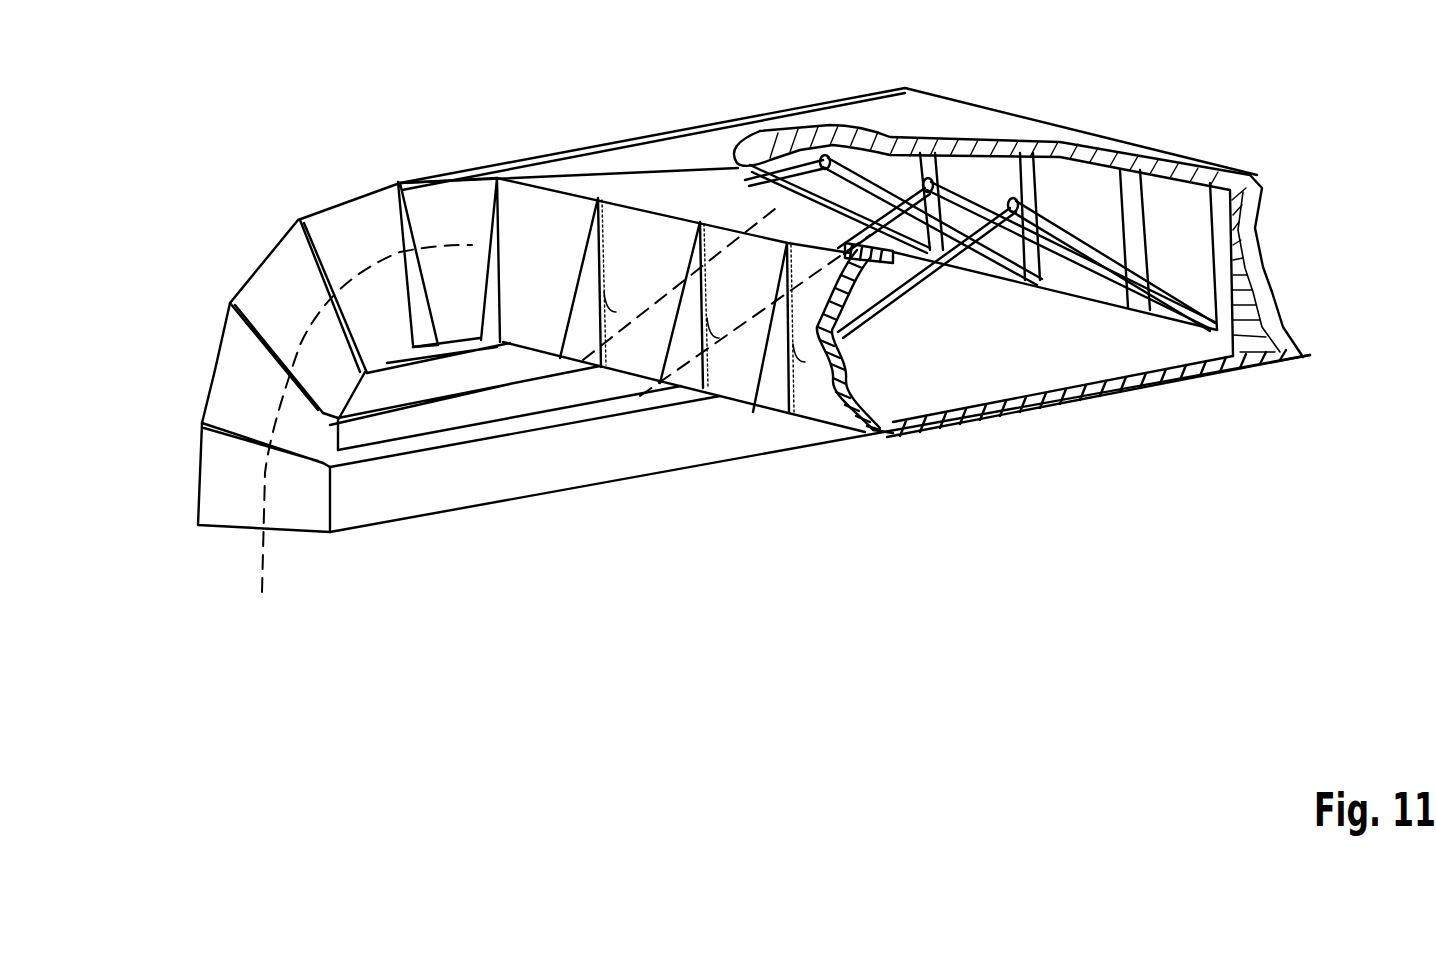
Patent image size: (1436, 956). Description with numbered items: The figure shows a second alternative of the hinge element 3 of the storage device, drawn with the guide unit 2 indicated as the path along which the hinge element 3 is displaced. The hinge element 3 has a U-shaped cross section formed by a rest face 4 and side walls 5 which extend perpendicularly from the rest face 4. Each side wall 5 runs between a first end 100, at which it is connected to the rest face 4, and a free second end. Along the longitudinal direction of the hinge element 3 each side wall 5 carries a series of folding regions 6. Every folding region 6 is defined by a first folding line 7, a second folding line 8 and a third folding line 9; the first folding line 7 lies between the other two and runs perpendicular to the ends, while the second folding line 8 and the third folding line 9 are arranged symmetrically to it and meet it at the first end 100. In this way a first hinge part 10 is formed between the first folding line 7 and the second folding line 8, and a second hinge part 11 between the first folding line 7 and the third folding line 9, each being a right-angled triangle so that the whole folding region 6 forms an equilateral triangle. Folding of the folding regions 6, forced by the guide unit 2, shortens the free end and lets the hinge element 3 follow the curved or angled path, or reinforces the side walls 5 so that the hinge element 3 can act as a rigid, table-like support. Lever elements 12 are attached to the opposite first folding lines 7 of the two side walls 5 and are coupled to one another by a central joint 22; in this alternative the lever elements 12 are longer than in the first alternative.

The guide unit 2 is at (256, 578).
The hinge element 3 is at (340, 158).
The rest face 4 is at (688, 150).
The side wall 5 is at (1175, 198).
The folding region 6 is at (418, 208).
The first folding line 7 is at (800, 387).
The second folding line 8 is at (760, 388).
The third folding line 9 is at (857, 405).
The first hinge part 10 is at (775, 383).
The second hinge part 11 is at (820, 363).
The lever element 12 is at (888, 300).
The central joint 22 is at (1050, 158).
The first end 100 is at (652, 218).